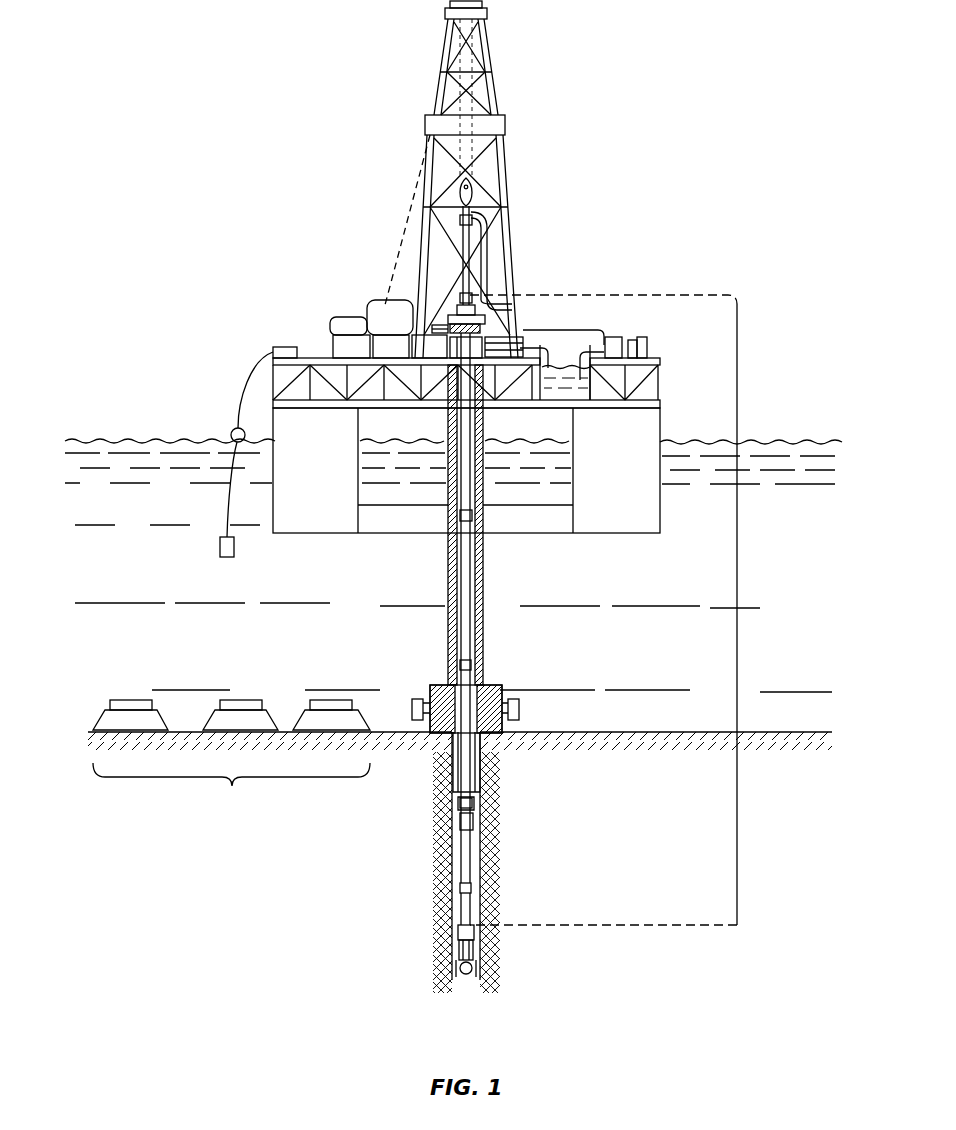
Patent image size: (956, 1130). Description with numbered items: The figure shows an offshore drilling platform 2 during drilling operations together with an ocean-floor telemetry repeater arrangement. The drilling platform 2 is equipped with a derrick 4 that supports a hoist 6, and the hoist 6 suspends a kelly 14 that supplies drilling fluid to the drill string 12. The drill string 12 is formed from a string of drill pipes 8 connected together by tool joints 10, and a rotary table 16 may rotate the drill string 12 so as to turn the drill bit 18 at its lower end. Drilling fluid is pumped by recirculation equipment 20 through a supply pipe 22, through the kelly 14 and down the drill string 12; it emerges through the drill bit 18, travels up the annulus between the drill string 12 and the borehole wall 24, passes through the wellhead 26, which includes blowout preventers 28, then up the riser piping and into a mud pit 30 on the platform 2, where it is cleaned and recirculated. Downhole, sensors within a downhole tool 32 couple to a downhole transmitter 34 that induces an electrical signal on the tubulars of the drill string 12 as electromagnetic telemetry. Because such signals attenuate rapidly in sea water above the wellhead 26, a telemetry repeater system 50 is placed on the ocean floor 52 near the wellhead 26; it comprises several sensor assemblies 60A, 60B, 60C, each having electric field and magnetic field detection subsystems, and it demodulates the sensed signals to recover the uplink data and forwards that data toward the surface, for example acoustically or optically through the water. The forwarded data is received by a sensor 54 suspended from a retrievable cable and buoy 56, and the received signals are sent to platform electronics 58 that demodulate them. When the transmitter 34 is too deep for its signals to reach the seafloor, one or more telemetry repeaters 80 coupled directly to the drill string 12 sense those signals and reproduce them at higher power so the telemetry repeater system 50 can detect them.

The drilling platform 2 is at (325, 357).
The derrick 4 is at (493, 87).
The hoist 6 is at (488, 190).
The drill pipes 8 is at (470, 680).
The tool joints 10 is at (460, 665).
The drill string 12 is at (738, 587).
The kelly 14 is at (465, 237).
The rotary table 16 is at (482, 313).
The drill bit 18 is at (473, 960).
The recirculation equipment 20 is at (613, 338).
The supply pipe 22 is at (497, 248).
The borehole wall 24 is at (458, 873).
The wellhead 26 is at (497, 685).
The blowout preventers 28 is at (520, 710).
The mud pit 30 is at (583, 400).
The downhole tool 32 is at (463, 947).
The downhole transmitter 34 is at (460, 930).
The telemetry repeater system 50 is at (232, 786).
The ocean floor 52 is at (772, 735).
The sensor 54 is at (220, 548).
The cable and buoy 56 is at (232, 430).
The platform electronics 58 is at (282, 346).
The sensor assembly 60A is at (122, 698).
The sensor assembly 60B is at (242, 700).
The sensor assembly 60C is at (323, 698).
The telemetry repeaters 80 is at (473, 820).